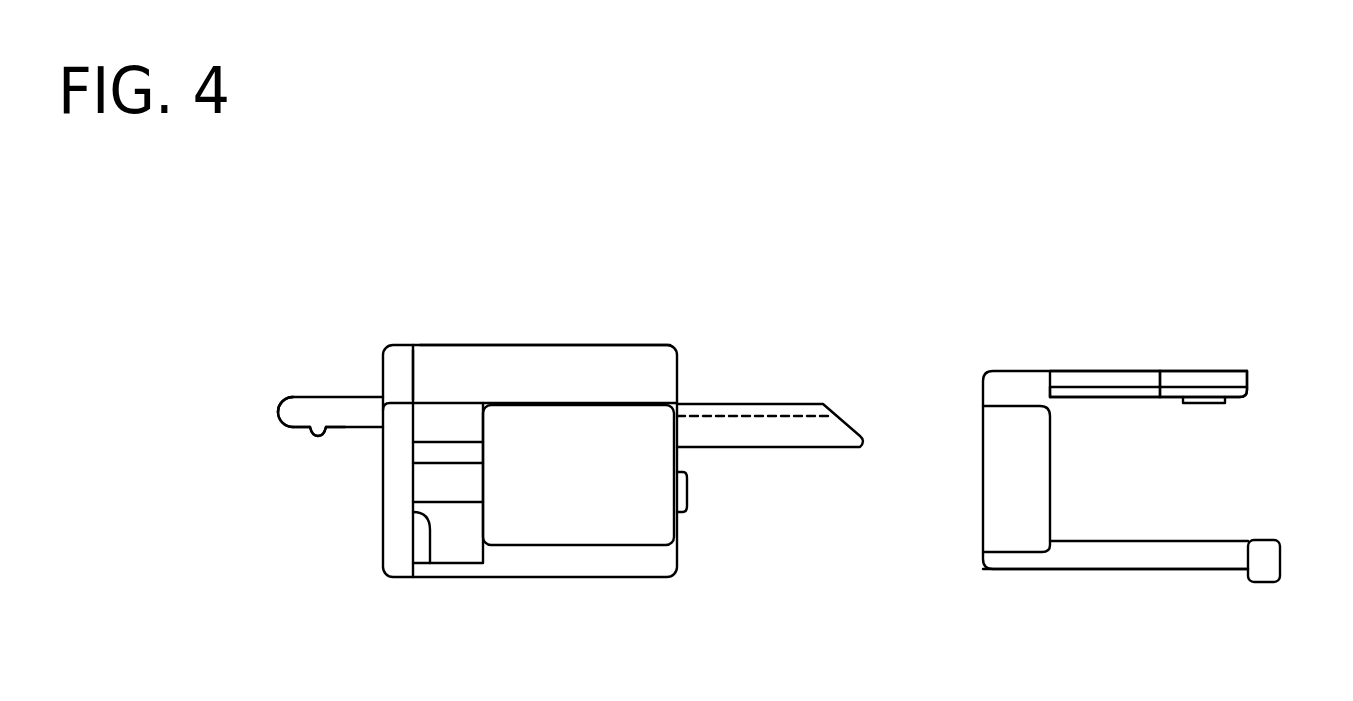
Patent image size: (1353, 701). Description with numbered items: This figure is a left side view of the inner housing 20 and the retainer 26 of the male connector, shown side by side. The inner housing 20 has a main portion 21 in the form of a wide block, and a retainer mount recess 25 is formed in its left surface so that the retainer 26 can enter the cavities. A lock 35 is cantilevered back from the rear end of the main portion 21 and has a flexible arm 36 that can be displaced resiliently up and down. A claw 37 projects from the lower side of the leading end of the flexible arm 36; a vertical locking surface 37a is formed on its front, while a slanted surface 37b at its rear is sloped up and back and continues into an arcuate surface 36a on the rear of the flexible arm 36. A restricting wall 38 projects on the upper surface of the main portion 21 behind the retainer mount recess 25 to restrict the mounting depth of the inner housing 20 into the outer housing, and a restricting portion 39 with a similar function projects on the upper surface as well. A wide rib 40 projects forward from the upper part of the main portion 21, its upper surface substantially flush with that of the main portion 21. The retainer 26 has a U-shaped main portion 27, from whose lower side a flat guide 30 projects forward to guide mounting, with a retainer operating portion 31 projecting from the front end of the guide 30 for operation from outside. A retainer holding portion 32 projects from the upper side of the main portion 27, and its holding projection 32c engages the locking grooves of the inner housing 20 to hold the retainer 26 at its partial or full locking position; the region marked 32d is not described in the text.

The inner housing 20 is at (645, 567).
The main portion 21 is at (572, 527).
The retainer mount recess 25 is at (432, 527).
The retainer 26 is at (1025, 570).
The main portion 27 is at (998, 503).
The guide 30 is at (1152, 560).
The retainer operating portion 31 is at (1272, 557).
The retainer holding portion 32 is at (1210, 372).
The holding projection 32c is at (1205, 403).
The arm plate portion 32d is at (1108, 382).
The lock 35 is at (283, 398).
The flexible arm 36 is at (347, 405).
The arcuate surface 36a is at (277, 412).
The claw 37 is at (316, 437).
The vertical locking surface 37a is at (327, 436).
The slanted surface 37b is at (300, 432).
The restricting wall 38 is at (400, 367).
The restricting portion 39 is at (513, 373).
The rib 40 is at (752, 430).